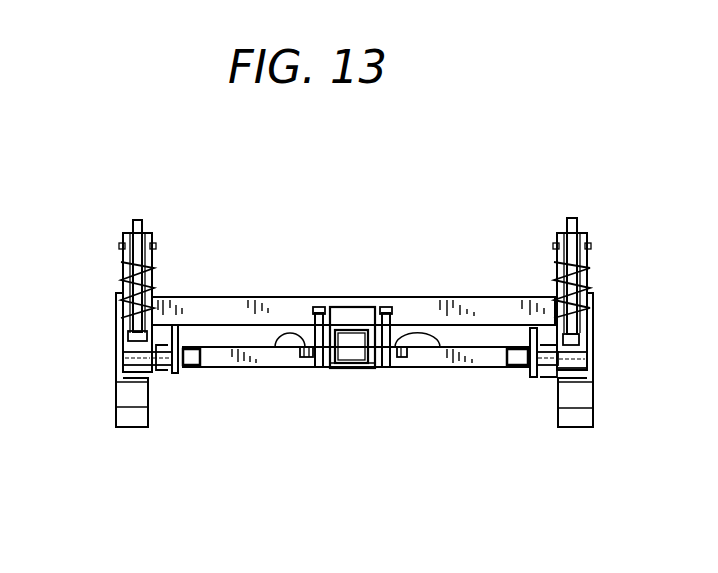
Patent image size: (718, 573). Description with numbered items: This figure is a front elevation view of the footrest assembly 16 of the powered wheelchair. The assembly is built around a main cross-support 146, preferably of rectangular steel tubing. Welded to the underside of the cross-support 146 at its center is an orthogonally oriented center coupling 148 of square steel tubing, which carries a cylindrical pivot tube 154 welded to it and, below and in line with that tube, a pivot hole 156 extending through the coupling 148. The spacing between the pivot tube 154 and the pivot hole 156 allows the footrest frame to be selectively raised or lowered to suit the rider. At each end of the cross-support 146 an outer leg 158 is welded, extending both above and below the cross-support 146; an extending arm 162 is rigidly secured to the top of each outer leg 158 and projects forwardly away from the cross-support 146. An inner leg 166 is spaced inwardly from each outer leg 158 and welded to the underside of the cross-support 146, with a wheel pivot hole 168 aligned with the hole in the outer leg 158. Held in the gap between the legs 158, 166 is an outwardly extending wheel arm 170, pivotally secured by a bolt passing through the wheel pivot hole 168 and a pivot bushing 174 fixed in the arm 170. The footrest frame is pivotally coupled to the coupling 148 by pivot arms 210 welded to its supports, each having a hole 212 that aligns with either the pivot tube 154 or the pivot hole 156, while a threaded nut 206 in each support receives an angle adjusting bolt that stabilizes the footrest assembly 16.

The footrest assembly 16 is at (585, 214).
The main cross-support 146 is at (452, 297).
The center coupling 148 is at (375, 368).
The pivot tube 154 is at (348, 307).
The pivot hole 156 is at (340, 337).
The outer leg 158 is at (125, 268).
The extending arm 162 is at (152, 237).
The inner leg 166 is at (173, 377).
The wheel pivot hole 168 is at (190, 372).
The wheel arm 170 is at (148, 393).
The pivot bushing 174 is at (168, 373).
The threaded nut 206 is at (275, 347).
The pivot arm 210 is at (318, 308).
The hole 212 is at (297, 317).